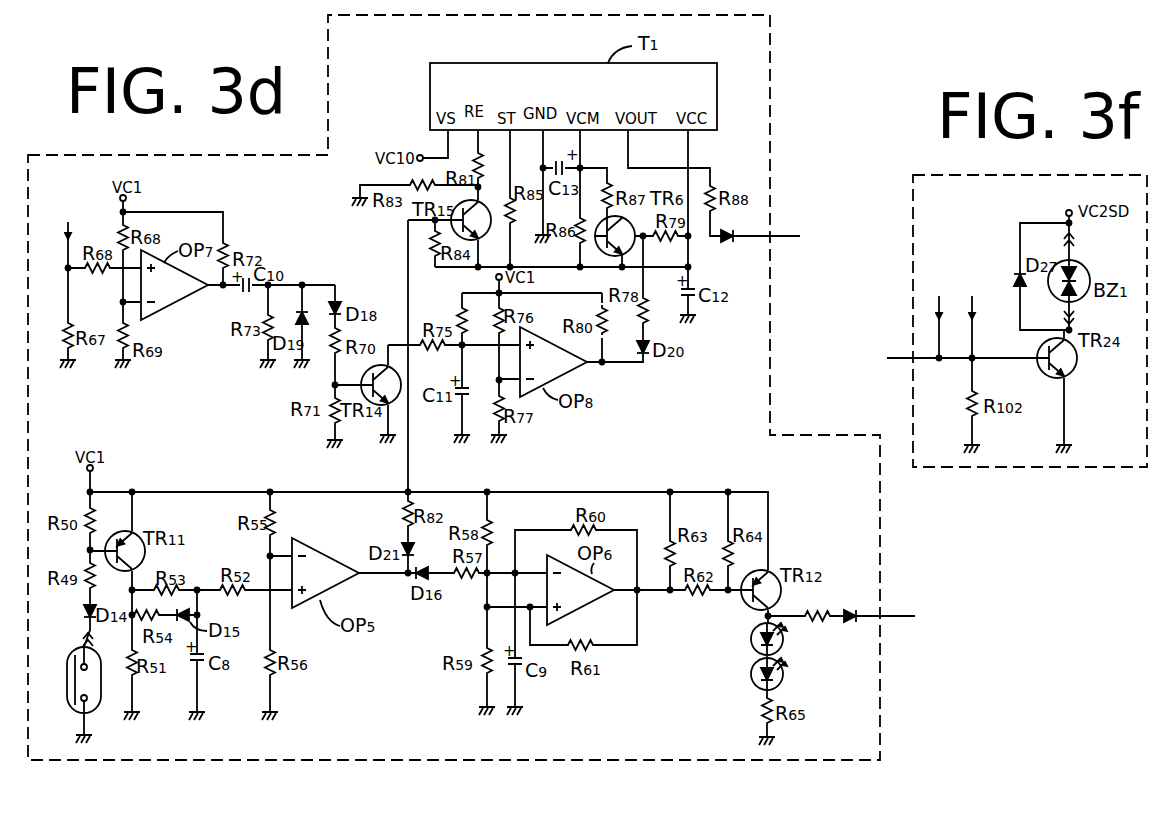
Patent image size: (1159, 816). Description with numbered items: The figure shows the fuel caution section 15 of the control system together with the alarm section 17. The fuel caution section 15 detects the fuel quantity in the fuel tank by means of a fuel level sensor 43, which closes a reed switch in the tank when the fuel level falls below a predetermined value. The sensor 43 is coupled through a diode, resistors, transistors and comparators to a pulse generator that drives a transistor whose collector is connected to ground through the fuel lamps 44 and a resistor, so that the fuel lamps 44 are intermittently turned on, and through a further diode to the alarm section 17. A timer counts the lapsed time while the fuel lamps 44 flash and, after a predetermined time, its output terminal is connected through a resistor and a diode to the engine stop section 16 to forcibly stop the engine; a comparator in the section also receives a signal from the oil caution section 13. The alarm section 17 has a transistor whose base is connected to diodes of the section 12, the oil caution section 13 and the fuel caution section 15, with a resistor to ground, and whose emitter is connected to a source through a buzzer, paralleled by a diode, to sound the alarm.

In FIG. 3f, the section 12 is at (939, 316).
In FIG. 3d, the oil caution section 13 is at (70, 232).
In FIG. 3f, the oil caution section 13 is at (974, 316).
In FIG. 3d, the fuel caution section 15 is at (770, 97).
In FIG. 3f, the fuel caution section 15 is at (950, 360).
In FIG. 3d, the engine stop section 16 is at (770, 240).
In FIG. 3d, the alarm section 17 is at (854, 620).
In FIG. 3f, the alarm section 17 is at (1076, 467).
In FIG. 3d, the fuel level sensor 43 is at (67, 698).
In FIG. 3d, the fuel lamps 44 is at (748, 660).